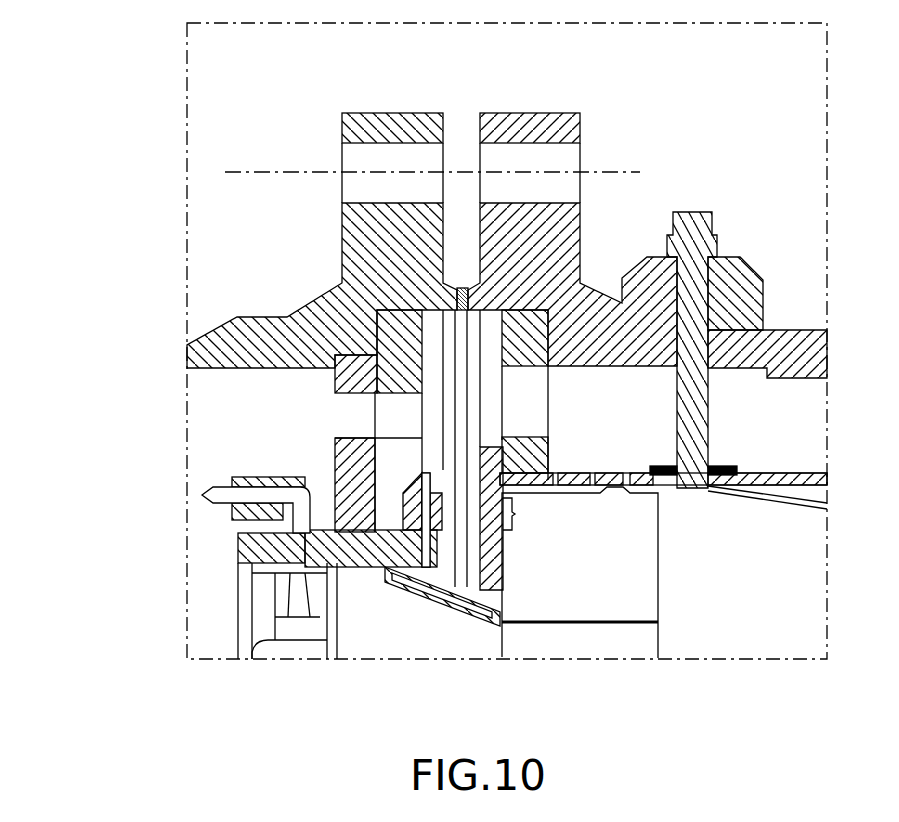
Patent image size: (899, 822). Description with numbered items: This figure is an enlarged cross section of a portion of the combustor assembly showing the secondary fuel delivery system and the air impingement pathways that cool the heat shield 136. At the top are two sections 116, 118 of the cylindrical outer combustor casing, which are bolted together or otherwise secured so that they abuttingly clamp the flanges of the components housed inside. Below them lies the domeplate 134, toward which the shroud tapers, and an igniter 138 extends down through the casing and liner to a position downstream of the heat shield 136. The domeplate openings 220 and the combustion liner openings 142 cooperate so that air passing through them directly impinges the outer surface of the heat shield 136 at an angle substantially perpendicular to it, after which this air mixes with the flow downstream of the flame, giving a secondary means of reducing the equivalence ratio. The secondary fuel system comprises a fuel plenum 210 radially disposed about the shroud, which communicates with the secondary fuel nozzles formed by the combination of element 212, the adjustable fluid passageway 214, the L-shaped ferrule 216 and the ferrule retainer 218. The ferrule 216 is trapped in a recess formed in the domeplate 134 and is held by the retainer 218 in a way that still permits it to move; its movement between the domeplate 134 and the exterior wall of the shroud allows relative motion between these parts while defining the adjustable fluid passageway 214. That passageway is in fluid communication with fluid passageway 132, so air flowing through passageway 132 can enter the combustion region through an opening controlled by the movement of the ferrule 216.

The casing section 116 is at (512, 113).
The casing section 118 is at (378, 113).
The fluid passageway 132 is at (278, 433).
The domeplate 134 is at (350, 340).
The heat shield 136 is at (628, 592).
The igniter 138 is at (692, 212).
The combustion liner openings 142 is at (630, 473).
The fuel plenum 210 is at (392, 588).
The secondary fuel nozzle element 212 is at (480, 478).
The adjustable fluid passageway 214 is at (502, 592).
The L-shaped ferrule 216 is at (448, 584).
The ferrule retainer 218 is at (418, 584).
The domeplate openings 220 is at (535, 514).